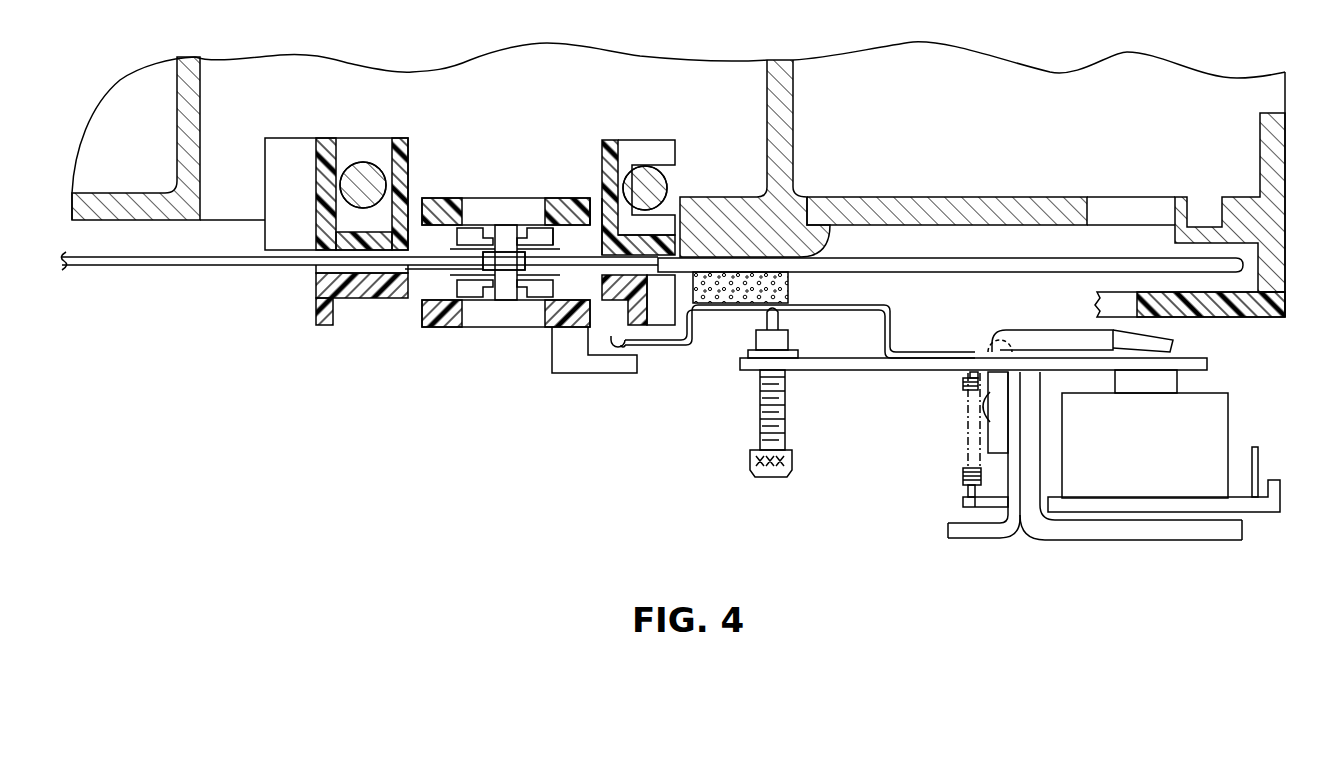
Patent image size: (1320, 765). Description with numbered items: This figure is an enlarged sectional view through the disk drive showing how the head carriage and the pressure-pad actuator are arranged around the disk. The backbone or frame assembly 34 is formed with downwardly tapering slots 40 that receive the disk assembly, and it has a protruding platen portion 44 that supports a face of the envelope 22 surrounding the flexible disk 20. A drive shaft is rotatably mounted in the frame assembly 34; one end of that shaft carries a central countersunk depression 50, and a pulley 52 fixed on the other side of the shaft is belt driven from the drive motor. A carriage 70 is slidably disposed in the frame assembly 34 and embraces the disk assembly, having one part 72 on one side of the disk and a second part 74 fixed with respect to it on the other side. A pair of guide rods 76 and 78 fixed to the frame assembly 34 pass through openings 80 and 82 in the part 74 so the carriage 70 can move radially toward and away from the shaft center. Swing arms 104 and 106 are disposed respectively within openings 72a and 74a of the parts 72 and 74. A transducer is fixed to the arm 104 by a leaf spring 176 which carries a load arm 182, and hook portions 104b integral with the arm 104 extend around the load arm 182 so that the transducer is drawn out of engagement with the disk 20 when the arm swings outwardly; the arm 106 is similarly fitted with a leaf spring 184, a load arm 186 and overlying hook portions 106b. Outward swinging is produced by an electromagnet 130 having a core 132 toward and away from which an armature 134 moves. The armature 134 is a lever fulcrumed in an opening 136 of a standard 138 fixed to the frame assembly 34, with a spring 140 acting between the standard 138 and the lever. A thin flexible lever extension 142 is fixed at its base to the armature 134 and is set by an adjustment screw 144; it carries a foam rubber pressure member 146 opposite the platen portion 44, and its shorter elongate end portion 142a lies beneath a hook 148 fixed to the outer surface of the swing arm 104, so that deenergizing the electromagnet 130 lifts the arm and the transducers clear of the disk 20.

The disk 20 is at (168, 264).
The envelope 22 is at (1160, 258).
The frame assembly 34 is at (412, 72).
The slots 40 is at (1243, 242).
The platen portion 44 is at (808, 250).
The central countersunk depression 50 is at (505, 300).
The pulley 52 is at (505, 250).
The carriage 70 is at (651, 150).
The carriage part 72 is at (362, 306).
The opening 72a is at (400, 302).
The second carriage part 74 is at (608, 138).
The opening 74a is at (594, 213).
The guide rod 76 is at (376, 164).
The guide rod 78 is at (668, 188).
The opening 80 is at (356, 170).
The opening 82 is at (668, 178).
The swing arm 104 is at (437, 328).
The hook portions 104b is at (470, 298).
The swing arm 106 is at (437, 196).
The hook portions 106b is at (470, 230).
The electromagnet 130 is at (1128, 457).
The core 132 is at (1178, 380).
The armature 134 is at (1210, 360).
The opening 136 is at (994, 332).
The standard 138 is at (1060, 330).
The spring 140 is at (963, 483).
The lever extension 142 is at (893, 330).
The end portion 142a is at (659, 348).
The adjustment screw 144 is at (788, 410).
The foam rubber pressure member 146 is at (790, 290).
The hook 148 is at (598, 375).
The leaf spring 176 is at (432, 272).
The load arm 182 is at (522, 292).
The leaf spring 184 is at (557, 233).
The load arm 186 is at (527, 232).